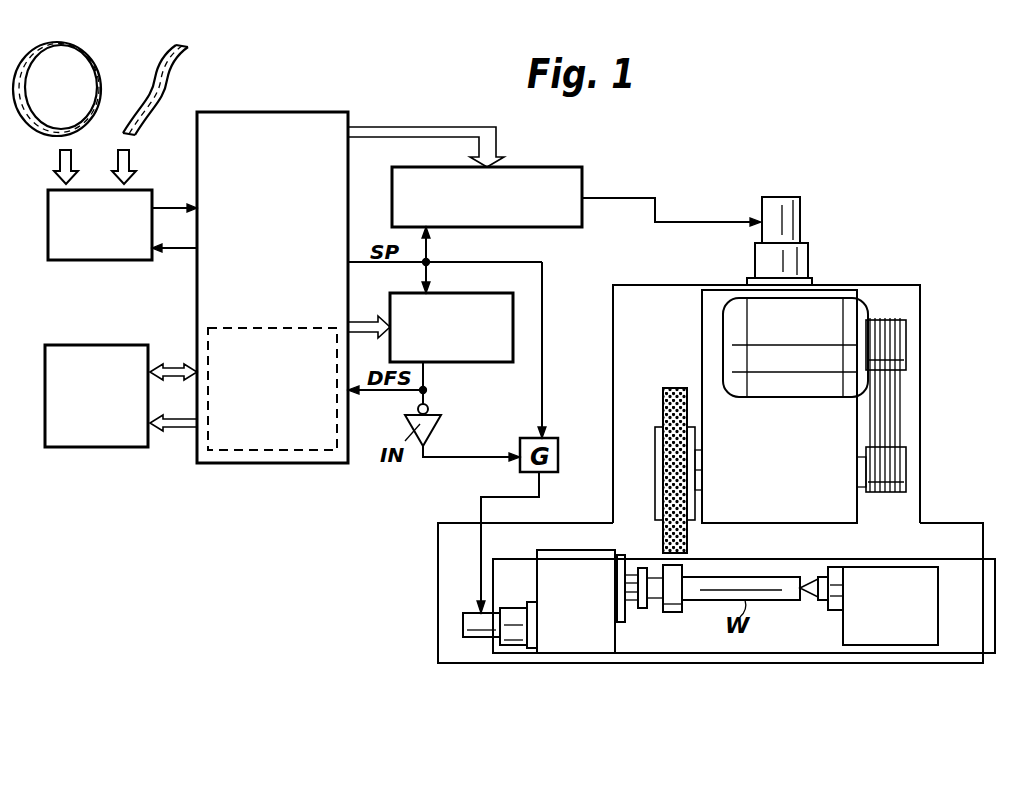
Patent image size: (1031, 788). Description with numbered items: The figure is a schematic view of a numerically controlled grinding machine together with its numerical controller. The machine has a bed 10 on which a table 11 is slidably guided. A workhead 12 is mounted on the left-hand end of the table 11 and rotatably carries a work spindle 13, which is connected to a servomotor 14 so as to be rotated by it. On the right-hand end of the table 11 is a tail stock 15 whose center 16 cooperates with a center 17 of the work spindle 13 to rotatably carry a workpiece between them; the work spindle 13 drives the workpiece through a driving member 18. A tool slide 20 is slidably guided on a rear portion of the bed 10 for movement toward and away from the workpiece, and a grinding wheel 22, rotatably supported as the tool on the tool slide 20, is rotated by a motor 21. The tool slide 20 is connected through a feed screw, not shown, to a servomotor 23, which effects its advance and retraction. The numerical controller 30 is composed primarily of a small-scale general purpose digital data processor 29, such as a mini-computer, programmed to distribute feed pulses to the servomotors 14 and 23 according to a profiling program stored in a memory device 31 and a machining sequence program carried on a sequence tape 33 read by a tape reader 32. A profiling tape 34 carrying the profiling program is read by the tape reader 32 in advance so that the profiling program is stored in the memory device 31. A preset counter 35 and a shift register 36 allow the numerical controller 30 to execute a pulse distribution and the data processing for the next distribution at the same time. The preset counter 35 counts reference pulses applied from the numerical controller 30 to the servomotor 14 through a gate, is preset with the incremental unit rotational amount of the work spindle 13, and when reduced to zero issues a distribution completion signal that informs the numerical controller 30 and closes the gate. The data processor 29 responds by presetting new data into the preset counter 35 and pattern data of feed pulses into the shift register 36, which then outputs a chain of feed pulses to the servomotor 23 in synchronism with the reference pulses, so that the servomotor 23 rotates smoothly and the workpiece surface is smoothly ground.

The bed 10 is at (614, 412).
The table 11 is at (768, 648).
The workhead 12 is at (580, 650).
The work spindle 13 is at (618, 590).
The servomotor 14 is at (512, 637).
The tail stock 15 is at (922, 645).
The center 16 is at (806, 597).
The center 17 is at (632, 595).
The driving member 18 is at (640, 565).
The tool slide 20 is at (790, 486).
The motor 21 is at (825, 310).
The grinding wheel 22 is at (668, 388).
The servomotor 23 is at (762, 262).
The data processor 29 is at (255, 437).
The numerical controller 30 is at (304, 112).
The memory device 31 is at (97, 447).
The tape reader 32 is at (97, 260).
The sequence tape 33 is at (183, 62).
The profiling tape 34 is at (97, 58).
The preset counter 35 is at (490, 362).
The shift register 36 is at (548, 167).